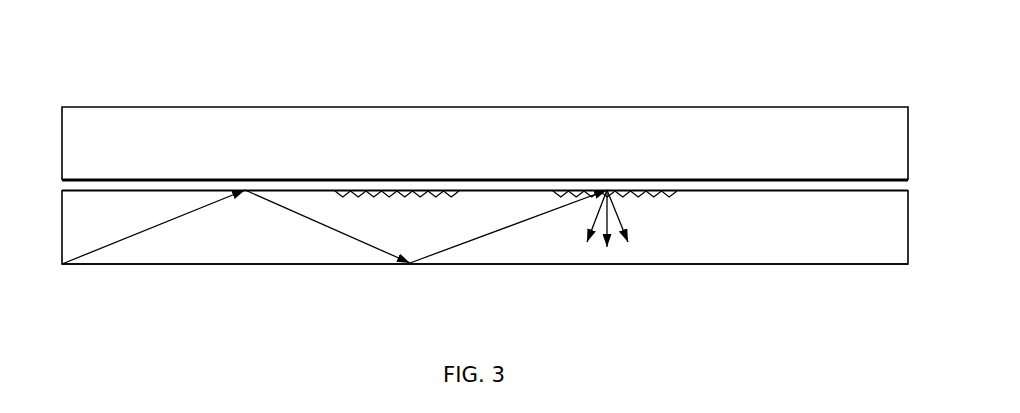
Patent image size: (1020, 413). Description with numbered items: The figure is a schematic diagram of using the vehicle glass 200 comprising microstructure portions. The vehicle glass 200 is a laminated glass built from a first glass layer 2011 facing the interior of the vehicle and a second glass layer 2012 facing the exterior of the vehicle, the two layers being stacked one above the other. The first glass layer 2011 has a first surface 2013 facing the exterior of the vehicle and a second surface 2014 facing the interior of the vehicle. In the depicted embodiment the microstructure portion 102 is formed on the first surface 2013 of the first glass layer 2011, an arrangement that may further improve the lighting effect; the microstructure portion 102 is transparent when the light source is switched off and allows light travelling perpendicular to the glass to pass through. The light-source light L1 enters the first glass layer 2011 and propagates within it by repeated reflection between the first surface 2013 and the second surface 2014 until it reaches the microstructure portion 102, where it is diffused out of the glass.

The vehicle glass 200 is at (467, 48).
The second glass layer 2012 is at (248, 140).
The first surface 2013 is at (205, 191).
The first glass layer 2011 is at (328, 250).
The second surface 2014 is at (795, 265).
The microstructure portion 102 is at (440, 192).
The light-source light L1 is at (118, 243).